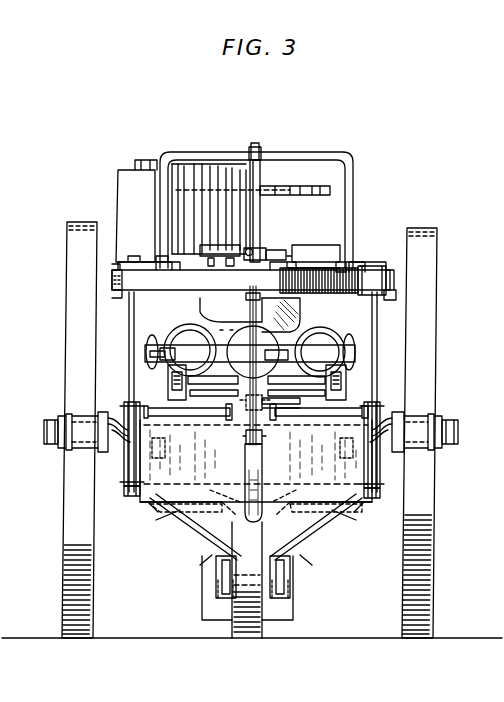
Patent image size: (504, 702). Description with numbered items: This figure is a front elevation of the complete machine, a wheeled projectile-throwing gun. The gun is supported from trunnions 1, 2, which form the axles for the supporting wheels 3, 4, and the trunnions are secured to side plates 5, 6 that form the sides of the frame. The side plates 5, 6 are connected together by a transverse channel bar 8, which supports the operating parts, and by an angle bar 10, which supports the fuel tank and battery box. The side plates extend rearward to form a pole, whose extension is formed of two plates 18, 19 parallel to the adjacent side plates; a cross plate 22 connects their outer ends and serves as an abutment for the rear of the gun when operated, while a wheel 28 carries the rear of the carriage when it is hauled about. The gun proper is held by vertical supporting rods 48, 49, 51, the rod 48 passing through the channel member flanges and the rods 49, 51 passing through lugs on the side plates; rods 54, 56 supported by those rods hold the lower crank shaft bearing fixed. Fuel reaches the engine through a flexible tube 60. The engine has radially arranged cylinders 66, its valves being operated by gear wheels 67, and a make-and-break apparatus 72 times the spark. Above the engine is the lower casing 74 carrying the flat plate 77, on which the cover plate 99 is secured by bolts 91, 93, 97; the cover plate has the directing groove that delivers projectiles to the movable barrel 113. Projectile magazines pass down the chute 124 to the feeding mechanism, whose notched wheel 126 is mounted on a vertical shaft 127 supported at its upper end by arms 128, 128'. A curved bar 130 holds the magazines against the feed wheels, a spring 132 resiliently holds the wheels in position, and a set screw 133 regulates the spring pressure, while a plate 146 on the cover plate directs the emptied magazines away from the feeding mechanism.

The trunnion 1 is at (118, 442).
The trunnion 2 is at (372, 448).
The supporting wheel 3 is at (66, 528).
The supporting wheel 4 is at (426, 572).
The side plate 5 is at (126, 494).
The side plate 6 is at (368, 496).
The transverse channel bar 8 is at (306, 484).
The angle bar 10 is at (196, 506).
The pole extension plate 19 is at (294, 545).
The pole extension plate 18 is at (200, 546).
The cross plate 22 is at (287, 603).
The wheel 28 is at (258, 630).
The vertical supporting rod 48 is at (249, 420).
The vertical supporting rod 49 is at (130, 352).
The vertical supporting rod 51 is at (378, 352).
The rod 54 is at (256, 461).
The rod 56 is at (318, 412).
The flexible tube 60 is at (263, 519).
The cylinder 66 is at (184, 334).
The gear wheel 67 is at (181, 388).
The make-and-break apparatus 72 is at (292, 402).
The lower casing 74 is at (290, 340).
The flat plate 77 is at (149, 292).
The bolt 91 is at (254, 274).
The bolt 93 is at (118, 294).
The bolt 97 is at (384, 300).
The cover plate 99 is at (140, 268).
The barrel 113 is at (374, 232).
The chute 124 is at (130, 176).
The notched wheel 126 is at (295, 196).
The vertical shaft 127 is at (261, 170).
The arm 128 is at (254, 199).
The arm 128' is at (329, 198).
The curved bar 130 is at (290, 256).
The spring 132 is at (268, 252).
The set screw 133 is at (254, 248).
The plate 146 is at (322, 254).